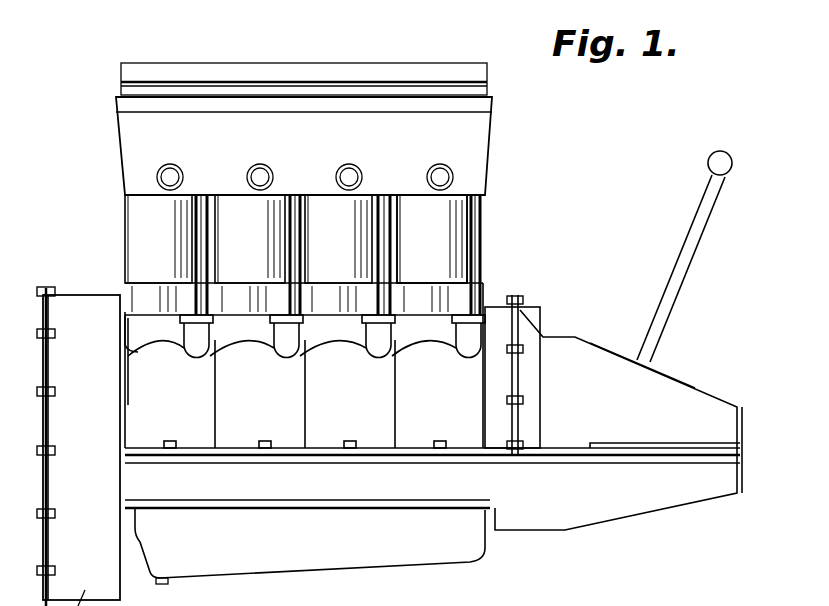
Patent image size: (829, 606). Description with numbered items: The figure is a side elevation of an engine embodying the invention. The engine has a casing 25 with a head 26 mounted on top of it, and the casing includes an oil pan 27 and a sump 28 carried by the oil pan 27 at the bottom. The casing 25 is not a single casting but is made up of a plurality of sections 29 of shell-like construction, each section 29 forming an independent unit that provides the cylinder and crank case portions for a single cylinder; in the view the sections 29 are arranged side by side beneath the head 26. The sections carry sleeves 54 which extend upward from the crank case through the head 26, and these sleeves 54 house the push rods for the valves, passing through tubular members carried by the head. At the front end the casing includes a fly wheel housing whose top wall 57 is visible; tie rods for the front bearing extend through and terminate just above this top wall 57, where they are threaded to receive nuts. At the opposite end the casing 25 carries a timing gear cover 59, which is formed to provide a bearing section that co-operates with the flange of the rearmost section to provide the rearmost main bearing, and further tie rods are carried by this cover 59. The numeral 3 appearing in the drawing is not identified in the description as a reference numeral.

The head 26 is at (467, 130).
The section 29 is at (430, 215).
The casing 25 is at (495, 256).
The sleeves 54 is at (286, 252).
The top wall of the fly wheel housing 57 is at (88, 298).
The timing gear cover 59 is at (498, 320).
The oil pan 27 is at (628, 508).
The sump 28 is at (462, 566).
The base 3 is at (250, 596).